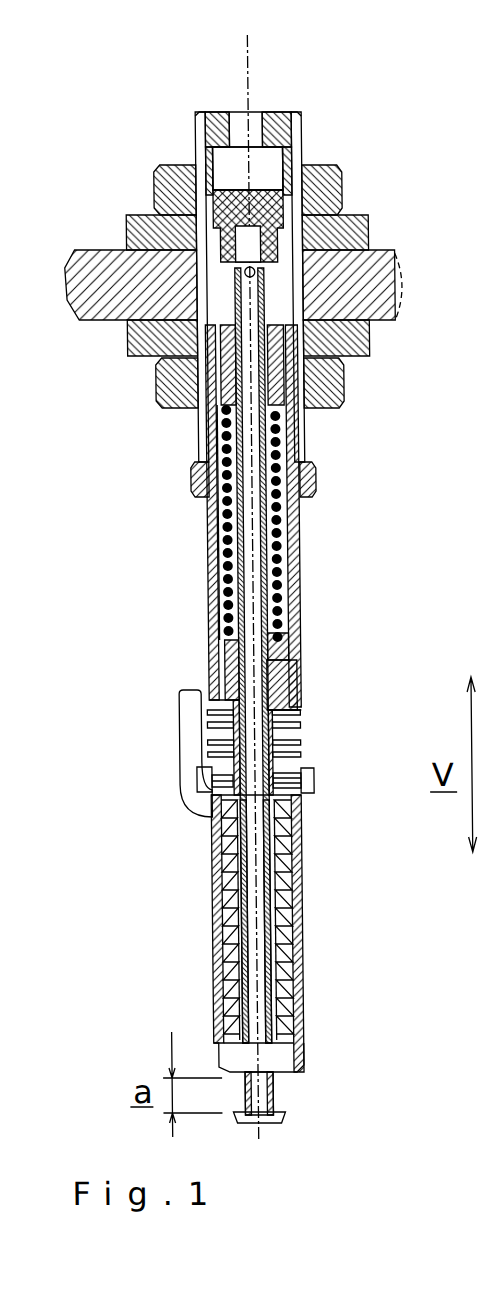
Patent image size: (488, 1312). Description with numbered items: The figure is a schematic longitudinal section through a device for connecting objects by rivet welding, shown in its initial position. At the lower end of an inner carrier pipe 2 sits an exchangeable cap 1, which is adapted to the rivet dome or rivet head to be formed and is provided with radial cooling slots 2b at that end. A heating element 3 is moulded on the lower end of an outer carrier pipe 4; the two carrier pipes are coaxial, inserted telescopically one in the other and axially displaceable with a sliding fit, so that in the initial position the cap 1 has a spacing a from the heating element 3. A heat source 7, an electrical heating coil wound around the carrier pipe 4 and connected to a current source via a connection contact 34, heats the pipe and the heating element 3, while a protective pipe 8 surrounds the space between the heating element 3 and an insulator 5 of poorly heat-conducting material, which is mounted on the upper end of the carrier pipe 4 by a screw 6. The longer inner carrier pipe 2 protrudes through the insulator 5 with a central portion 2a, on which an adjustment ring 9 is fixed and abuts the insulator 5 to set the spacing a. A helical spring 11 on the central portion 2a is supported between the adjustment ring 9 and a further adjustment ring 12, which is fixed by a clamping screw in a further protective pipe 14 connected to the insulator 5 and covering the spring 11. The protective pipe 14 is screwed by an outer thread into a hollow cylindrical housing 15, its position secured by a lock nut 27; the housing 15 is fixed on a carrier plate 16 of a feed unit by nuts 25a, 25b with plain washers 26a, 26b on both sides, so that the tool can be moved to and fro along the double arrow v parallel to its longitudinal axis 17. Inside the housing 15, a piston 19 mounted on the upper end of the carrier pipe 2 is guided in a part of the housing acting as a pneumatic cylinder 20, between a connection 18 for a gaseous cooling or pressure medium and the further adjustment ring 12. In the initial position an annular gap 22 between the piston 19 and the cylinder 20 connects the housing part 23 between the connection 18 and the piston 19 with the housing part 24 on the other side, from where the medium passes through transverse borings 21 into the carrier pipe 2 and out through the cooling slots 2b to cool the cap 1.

The cap 1 is at (270, 1118).
The carrier pipe 2 is at (231, 680).
The central portion 2a is at (222, 525).
The cooling slots 2b is at (261, 1080).
The heating element 3 is at (274, 1060).
The carrier pipe 4 is at (231, 918).
The insulator 5 is at (207, 740).
The screw 6 is at (301, 784).
The heat source 7 is at (217, 965).
The protective pipe 8 is at (211, 850).
The adjustment ring 9 is at (265, 648).
The spring 11 is at (273, 528).
The further adjustment ring 12 is at (273, 375).
The protective pipe 14 is at (204, 575).
The housing 15 is at (211, 122).
The carrier plate 16 is at (364, 283).
The longitudinal axis 17 is at (246, 63).
The connection 18 is at (237, 127).
The piston 19 is at (261, 212).
The pneumatic cylinder 20 is at (288, 180).
The transverse borings 21 is at (252, 270).
The annular gap 22 is at (264, 159).
The housing part 23 is at (265, 160).
The housing part 24 is at (275, 307).
The nut 25a is at (171, 188).
The nut 25b is at (181, 393).
The plain washer 26a is at (143, 228).
The plain washer 26b is at (151, 345).
The lock nut 27 is at (303, 485).
The connection contact 34 is at (188, 723).